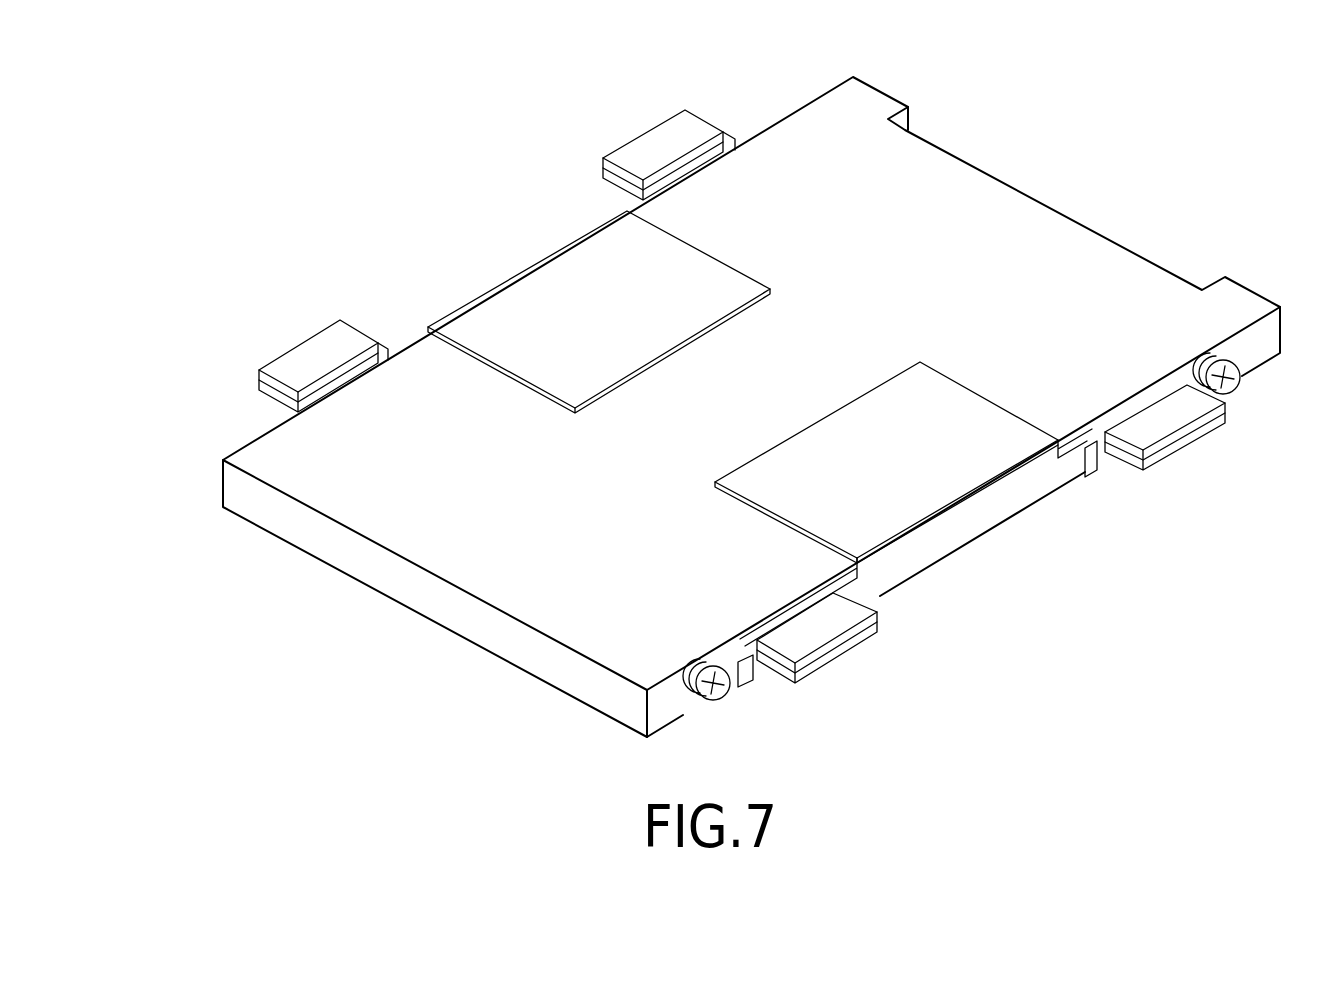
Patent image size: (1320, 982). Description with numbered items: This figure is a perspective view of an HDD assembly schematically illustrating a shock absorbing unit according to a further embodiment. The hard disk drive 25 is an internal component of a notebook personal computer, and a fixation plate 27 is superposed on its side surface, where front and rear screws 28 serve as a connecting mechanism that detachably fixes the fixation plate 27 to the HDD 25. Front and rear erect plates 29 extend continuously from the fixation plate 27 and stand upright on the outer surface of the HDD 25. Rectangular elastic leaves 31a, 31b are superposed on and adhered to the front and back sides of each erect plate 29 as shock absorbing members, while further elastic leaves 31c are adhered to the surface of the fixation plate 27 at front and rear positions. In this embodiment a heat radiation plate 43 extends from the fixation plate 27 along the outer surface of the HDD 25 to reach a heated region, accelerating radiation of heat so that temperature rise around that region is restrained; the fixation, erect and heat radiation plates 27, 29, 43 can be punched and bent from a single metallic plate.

The hard disk drive 25 is at (1072, 222).
The fixation plate 27 is at (850, 577).
The screw 28 is at (1210, 367).
The erect plate 29 is at (733, 147).
The elastic leaf 31a is at (615, 183).
The elastic leaf 31b is at (667, 123).
The elastic leaf 31c is at (1093, 473).
The heat radiation plate 43 is at (725, 262).